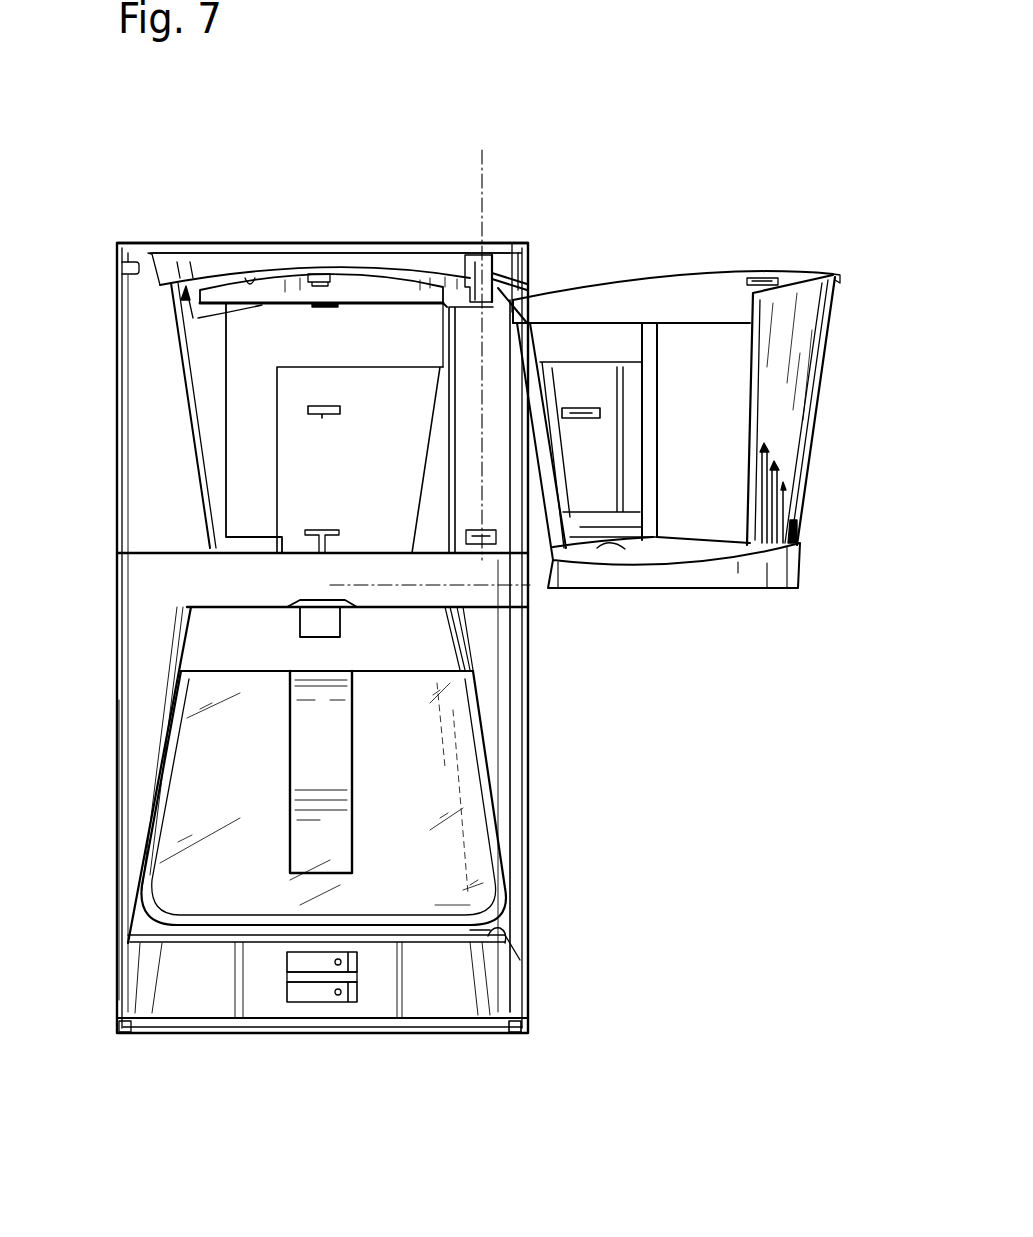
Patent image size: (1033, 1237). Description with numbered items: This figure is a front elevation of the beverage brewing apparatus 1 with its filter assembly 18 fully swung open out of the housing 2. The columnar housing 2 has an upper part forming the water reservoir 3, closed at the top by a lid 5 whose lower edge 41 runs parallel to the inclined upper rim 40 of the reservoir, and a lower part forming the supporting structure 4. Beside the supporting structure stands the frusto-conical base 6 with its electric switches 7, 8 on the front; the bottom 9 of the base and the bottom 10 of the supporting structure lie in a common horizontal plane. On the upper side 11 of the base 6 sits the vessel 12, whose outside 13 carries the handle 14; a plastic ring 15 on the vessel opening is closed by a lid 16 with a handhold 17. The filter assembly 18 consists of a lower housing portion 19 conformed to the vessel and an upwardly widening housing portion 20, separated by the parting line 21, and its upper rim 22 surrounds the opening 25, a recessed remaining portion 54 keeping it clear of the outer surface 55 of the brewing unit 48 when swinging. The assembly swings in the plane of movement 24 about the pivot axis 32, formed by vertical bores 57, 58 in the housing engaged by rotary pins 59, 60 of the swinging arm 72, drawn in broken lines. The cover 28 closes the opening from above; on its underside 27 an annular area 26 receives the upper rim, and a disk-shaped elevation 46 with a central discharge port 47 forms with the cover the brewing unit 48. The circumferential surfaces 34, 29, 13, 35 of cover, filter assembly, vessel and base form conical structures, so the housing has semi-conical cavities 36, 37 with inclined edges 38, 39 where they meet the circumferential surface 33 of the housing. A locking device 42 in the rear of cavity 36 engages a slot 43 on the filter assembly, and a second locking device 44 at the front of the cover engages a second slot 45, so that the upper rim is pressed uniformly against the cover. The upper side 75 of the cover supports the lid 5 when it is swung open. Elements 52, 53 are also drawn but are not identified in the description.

The beverage brewing apparatus 1 is at (650, 763).
The columnar housing 2 is at (112, 549).
The water reservoir 3 is at (120, 400).
The supporting structure 4 is at (125, 818).
The lid 5 is at (213, 243).
The base 6 is at (143, 988).
The electric switch 7 is at (290, 958).
The electric switch 8 is at (322, 996).
The bottom of the base 9 is at (433, 1035).
The bottom of the supporting structure 10 is at (127, 1035).
The upper side of the base 11 is at (497, 938).
The vessel 12 is at (475, 795).
The outside of the vessel 13 is at (505, 852).
The handle 14 is at (335, 752).
The plastic ring 15 is at (268, 668).
The lid 16 is at (225, 612).
The handhold 17 is at (300, 620).
The filter assembly 18 is at (812, 442).
The lower housing portion 19 is at (790, 572).
The housing portion 20 is at (822, 340).
The parting line 21 is at (699, 548).
The upper rim 22 is at (822, 274).
The plane of movement 24 is at (340, 590).
The opening 25 is at (687, 290).
The annular area 26 is at (255, 280).
The underside of the cover 27 is at (196, 302).
The cover 28 is at (195, 262).
The circumferential surface of the filter assembly 29 is at (825, 398).
The pivot axis 32 is at (480, 152).
The circumferential surface of the housing 33 is at (118, 865).
The circumferential surface of the cover 34 is at (402, 262).
The circumferential surface of the base 35 is at (527, 972).
The cavity 36 is at (205, 367).
The cavity 37 is at (213, 580).
The inclined edge 38 is at (182, 428).
The inclined edge 39 is at (212, 667).
The upper rim of the water reservoir 40 is at (125, 243).
The lower edge of the lid 41 is at (122, 266).
The locking device 42 is at (315, 414).
The slot 43 is at (588, 406).
The second locking device 44 is at (318, 274).
The second slot 45 is at (768, 278).
The elevation 46 is at (400, 298).
The central discharge port 47 is at (322, 305).
The brewing unit 48 is at (372, 283).
The rib 52 is at (764, 508).
The groove 53 is at (793, 532).
The remaining portion 54 is at (712, 320).
The outer surface 55 is at (195, 322).
The bore 57 is at (500, 535).
The bore 58 is at (463, 262).
The rotary pin 59 is at (478, 585).
The rotary pin 60 is at (493, 282).
The swinging arm 72 is at (533, 347).
The upper side of the cover 75 is at (158, 253).